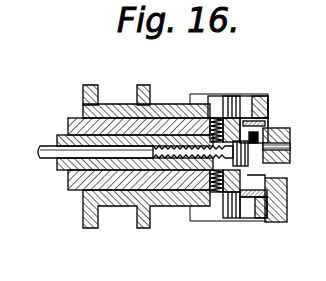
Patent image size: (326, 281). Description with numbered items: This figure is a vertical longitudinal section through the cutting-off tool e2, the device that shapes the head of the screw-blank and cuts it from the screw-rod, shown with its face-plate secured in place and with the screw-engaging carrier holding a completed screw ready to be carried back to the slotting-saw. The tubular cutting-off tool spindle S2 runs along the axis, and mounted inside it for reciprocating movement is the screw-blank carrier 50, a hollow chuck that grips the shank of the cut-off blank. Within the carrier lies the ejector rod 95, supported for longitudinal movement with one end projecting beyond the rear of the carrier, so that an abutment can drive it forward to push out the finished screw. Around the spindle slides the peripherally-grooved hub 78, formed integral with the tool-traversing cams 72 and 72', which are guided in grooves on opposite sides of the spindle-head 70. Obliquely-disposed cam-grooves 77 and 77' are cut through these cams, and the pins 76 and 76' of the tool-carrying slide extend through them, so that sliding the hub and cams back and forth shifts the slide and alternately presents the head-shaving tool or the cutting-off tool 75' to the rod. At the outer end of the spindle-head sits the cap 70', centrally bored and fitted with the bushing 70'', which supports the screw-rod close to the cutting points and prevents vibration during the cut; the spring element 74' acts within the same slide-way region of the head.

The spindle-head 70 is at (229, 145).
The peripherally-grooved hub 78 is at (106, 106).
The tool-traversing cam 72 is at (146, 96).
The cutting-off tool spindle S2 is at (70, 121).
The ejector rod 95 is at (39, 156).
The screw-blank carrier 50 is at (67, 176).
The tool-traversing cam 72' is at (146, 218).
The spring 74' is at (207, 179).
The cam-groove 77 is at (241, 106).
The pin 76 is at (237, 104).
The cutting-off tool 75' is at (252, 161).
The pin 76' is at (223, 213).
The cam-groove 77' is at (253, 219).
The bushing 70'' is at (294, 142).
The cap 70' is at (282, 198).
The cutting-off tool e2 is at (283, 97).